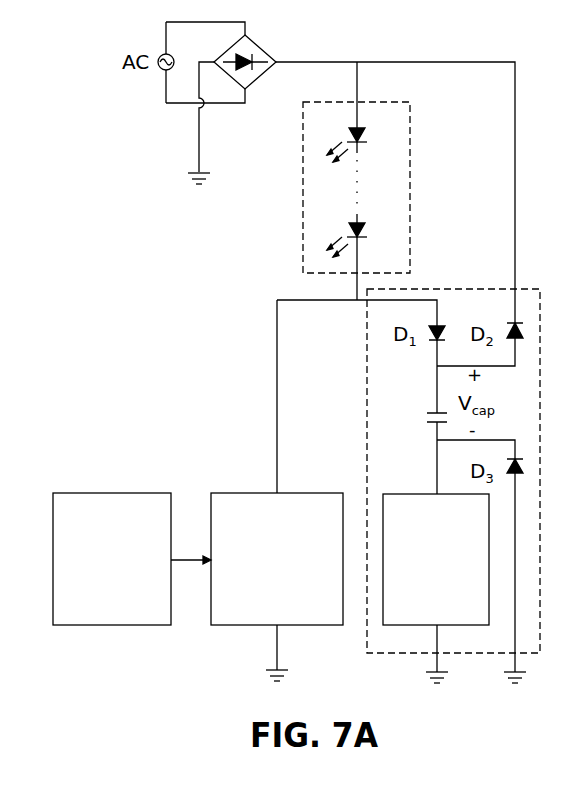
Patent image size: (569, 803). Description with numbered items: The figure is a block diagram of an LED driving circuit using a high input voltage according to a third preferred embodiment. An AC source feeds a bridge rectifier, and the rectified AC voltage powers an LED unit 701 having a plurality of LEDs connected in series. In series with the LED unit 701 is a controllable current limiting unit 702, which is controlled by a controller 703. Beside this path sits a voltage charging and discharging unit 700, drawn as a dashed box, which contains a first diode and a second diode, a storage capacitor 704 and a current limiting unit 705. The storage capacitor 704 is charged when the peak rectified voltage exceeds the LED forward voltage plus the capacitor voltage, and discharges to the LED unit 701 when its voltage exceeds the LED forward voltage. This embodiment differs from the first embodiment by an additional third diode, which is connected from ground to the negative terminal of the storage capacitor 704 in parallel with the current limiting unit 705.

The voltage charging and discharging unit 700 is at (454, 289).
The LED unit 701 is at (303, 189).
The controllable current limiting unit 702 is at (245, 493).
The controller 703 is at (113, 493).
The storage capacitor 704 is at (425, 408).
The current limiting unit 705 is at (402, 493).